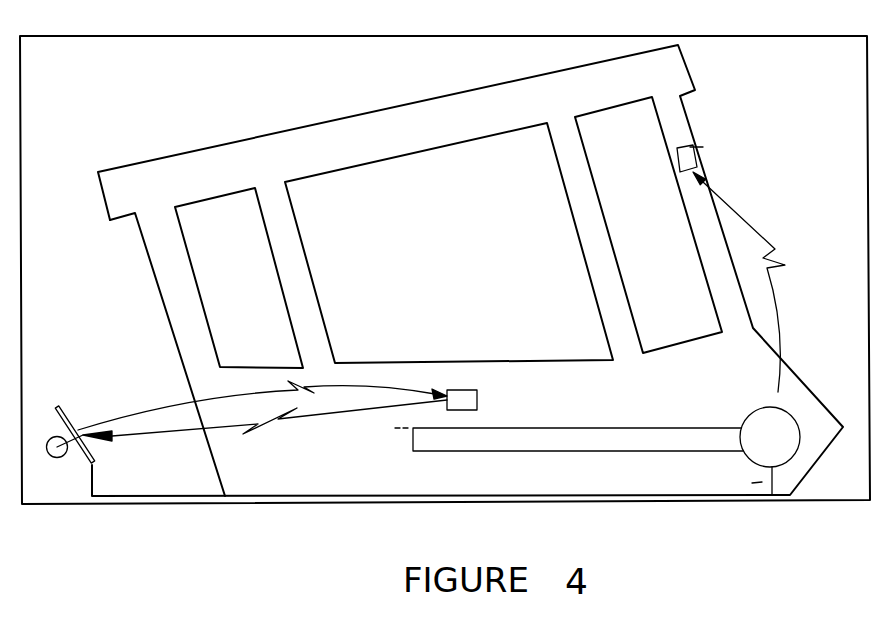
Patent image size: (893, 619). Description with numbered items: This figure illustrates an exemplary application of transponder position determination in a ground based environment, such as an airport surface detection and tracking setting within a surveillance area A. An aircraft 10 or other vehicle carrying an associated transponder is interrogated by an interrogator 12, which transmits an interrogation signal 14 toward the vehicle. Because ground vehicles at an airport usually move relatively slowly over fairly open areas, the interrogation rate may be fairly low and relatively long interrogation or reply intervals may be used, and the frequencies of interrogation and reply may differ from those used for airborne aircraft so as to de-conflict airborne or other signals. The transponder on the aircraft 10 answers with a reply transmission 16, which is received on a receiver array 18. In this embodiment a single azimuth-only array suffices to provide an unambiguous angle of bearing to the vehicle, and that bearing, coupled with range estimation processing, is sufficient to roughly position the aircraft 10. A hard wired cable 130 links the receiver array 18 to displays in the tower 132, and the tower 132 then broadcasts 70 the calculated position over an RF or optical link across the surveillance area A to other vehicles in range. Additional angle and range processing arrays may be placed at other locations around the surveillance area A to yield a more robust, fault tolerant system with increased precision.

The surveillance area A is at (138, 36).
The aircraft 10 is at (478, 392).
The interrogator 12 is at (53, 436).
The interrogation signal 14 is at (164, 409).
The reply transmission 16 is at (190, 427).
The receiver array 18 is at (86, 456).
The broadcast 70 is at (768, 233).
The hard wired cable 130 is at (382, 495).
The tower 132 is at (743, 413).